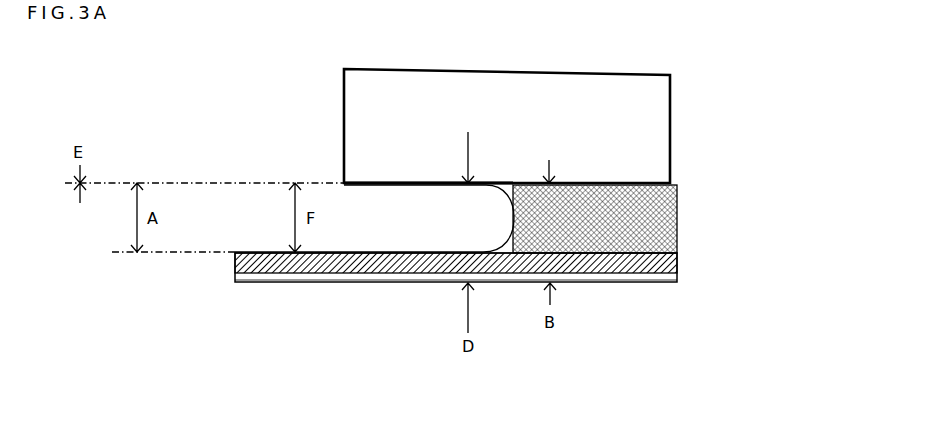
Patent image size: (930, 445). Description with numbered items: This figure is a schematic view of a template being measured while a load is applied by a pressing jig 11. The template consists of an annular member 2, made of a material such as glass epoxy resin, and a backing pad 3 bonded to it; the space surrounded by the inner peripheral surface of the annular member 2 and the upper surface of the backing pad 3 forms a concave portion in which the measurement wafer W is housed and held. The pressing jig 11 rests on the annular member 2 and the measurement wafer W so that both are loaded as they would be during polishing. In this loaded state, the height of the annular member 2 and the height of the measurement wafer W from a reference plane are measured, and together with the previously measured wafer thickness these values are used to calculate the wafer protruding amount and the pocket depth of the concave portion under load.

The pressing jig 11 is at (616, 124).
The annular member 2 is at (663, 215).
The backing pad 3 is at (663, 262).
The measurement wafer W is at (382, 230).